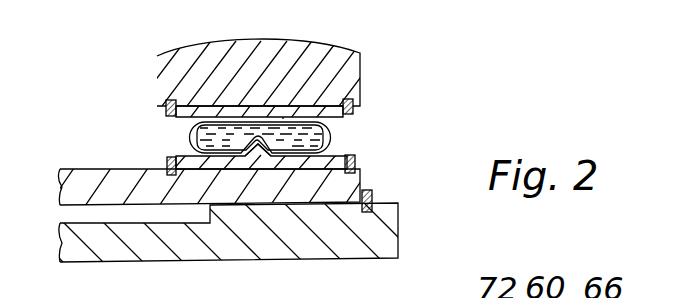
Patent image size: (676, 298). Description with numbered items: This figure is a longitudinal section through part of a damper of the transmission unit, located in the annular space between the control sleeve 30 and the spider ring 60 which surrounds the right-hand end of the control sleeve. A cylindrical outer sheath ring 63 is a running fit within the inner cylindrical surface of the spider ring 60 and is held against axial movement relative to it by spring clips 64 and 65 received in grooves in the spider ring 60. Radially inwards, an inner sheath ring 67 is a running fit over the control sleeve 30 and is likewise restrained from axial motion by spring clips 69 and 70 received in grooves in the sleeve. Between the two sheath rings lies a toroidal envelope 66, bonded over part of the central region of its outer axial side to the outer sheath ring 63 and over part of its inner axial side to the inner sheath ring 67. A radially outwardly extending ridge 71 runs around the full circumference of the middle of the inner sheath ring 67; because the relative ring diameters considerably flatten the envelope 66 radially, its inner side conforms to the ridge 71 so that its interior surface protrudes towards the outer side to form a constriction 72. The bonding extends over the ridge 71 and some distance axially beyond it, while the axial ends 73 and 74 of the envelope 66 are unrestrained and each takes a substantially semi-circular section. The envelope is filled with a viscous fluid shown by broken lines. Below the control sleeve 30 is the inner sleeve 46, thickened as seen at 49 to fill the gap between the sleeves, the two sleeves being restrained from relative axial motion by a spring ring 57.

The control sleeve 30 is at (78, 142).
The inner sleeve 46 is at (97, 245).
The thickened region of inner sleeve 49 is at (280, 208).
The spring ring 57 is at (372, 195).
The spider ring 60 is at (192, 57).
The outer sheath ring 63 is at (180, 114).
The spring clip 64 is at (166, 110).
The spring clip 65 is at (350, 108).
The toroidal envelope 66 is at (283, 117).
The inner sheath ring 67 is at (193, 158).
The spring clip 69 is at (167, 158).
The spring clip 70 is at (355, 158).
The ridge 71 is at (260, 155).
The constriction 72 is at (260, 127).
The axial end of envelope 73 is at (190, 137).
The axial end of envelope 74 is at (332, 136).